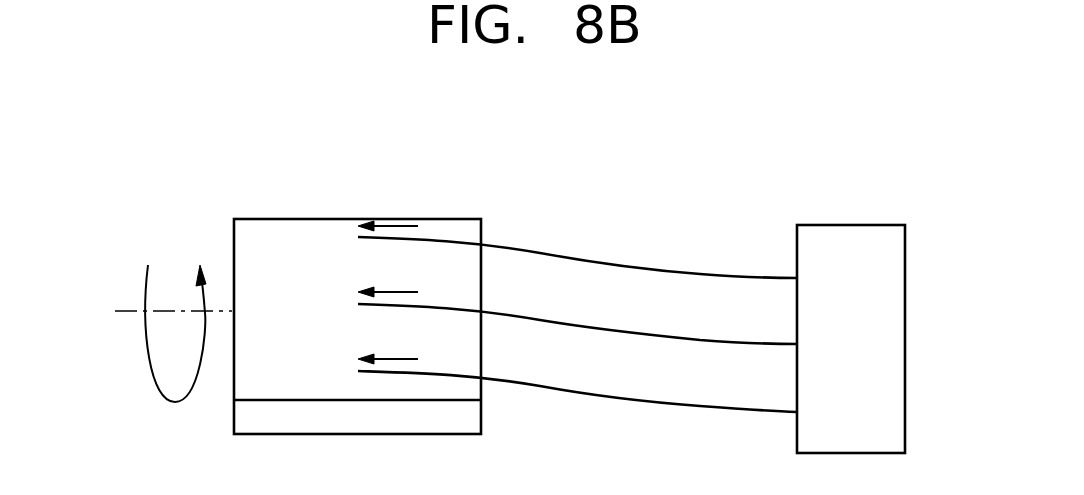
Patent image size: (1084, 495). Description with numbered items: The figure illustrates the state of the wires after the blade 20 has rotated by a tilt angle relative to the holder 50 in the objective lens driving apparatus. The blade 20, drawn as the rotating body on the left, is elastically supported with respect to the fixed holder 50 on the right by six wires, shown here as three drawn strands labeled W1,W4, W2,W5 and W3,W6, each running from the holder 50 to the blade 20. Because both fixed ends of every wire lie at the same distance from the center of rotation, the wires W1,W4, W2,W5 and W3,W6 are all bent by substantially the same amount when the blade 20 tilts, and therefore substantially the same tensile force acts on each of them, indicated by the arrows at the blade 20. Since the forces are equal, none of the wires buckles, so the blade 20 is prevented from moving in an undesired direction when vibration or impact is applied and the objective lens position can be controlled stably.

The blade 20 is at (277, 227).
The holder 50 is at (858, 233).
The wires W1,W4 is at (597, 260).
The wires W2,W5 is at (597, 325).
The wires W3,W6 is at (597, 390).